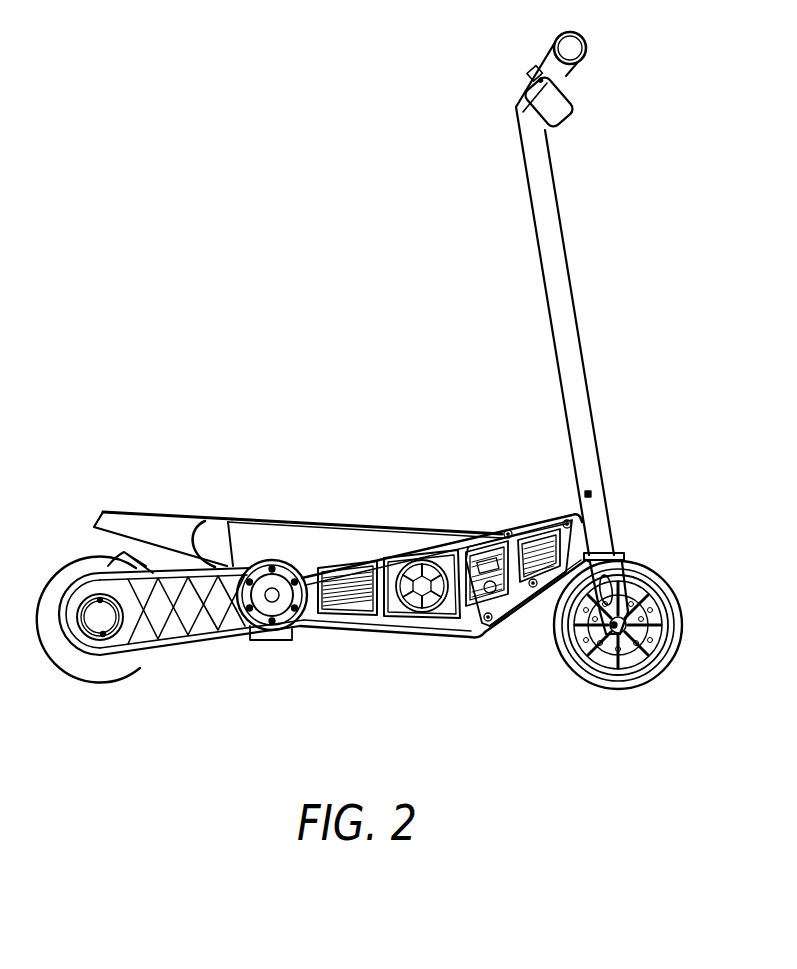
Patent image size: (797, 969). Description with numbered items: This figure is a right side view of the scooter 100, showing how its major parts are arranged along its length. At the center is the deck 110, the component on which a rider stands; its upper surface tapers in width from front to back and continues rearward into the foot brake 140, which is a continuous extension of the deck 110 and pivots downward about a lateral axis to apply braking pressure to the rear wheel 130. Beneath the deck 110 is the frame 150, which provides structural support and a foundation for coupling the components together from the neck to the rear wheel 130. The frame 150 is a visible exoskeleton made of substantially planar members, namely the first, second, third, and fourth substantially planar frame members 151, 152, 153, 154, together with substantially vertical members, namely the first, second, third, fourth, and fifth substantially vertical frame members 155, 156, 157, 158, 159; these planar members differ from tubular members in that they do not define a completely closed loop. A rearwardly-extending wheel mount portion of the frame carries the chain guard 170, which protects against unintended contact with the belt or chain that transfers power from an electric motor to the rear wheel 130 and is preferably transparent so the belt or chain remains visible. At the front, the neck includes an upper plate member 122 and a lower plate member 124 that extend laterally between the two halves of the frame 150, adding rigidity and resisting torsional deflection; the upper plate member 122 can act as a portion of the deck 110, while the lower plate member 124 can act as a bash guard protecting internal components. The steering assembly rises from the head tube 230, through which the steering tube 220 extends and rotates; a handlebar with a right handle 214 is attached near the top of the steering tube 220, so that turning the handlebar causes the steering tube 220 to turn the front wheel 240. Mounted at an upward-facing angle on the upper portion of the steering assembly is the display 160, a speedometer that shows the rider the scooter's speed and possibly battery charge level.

The scooter 100 is at (204, 150).
The deck 110 is at (287, 540).
The upper plate member 122 is at (541, 521).
The lower plate member 124 is at (505, 618).
The rear wheel 130 is at (73, 573).
The foot brake 140 is at (143, 525).
The frame 150 is at (492, 742).
The first substantially planar frame members 151 is at (401, 633).
The second substantially planar frame members 152 is at (546, 597).
The third substantially planar frame members 153 is at (482, 541).
The fourth substantially planar frame members 154 is at (402, 545).
The first substantially vertical frame members 155 is at (305, 618).
The second substantially vertical frame members 156 is at (356, 634).
The third substantially vertical frame members 157 is at (463, 619).
The fourth substantially vertical frame members 158 is at (507, 522).
The fifth substantially vertical frame members 159 is at (571, 535).
The display 160 is at (558, 108).
The chain guard 170 is at (150, 638).
The right handle 214 is at (560, 50).
The steering tube 220 is at (565, 313).
The head tube 230 is at (605, 518).
The front wheel 240 is at (683, 609).